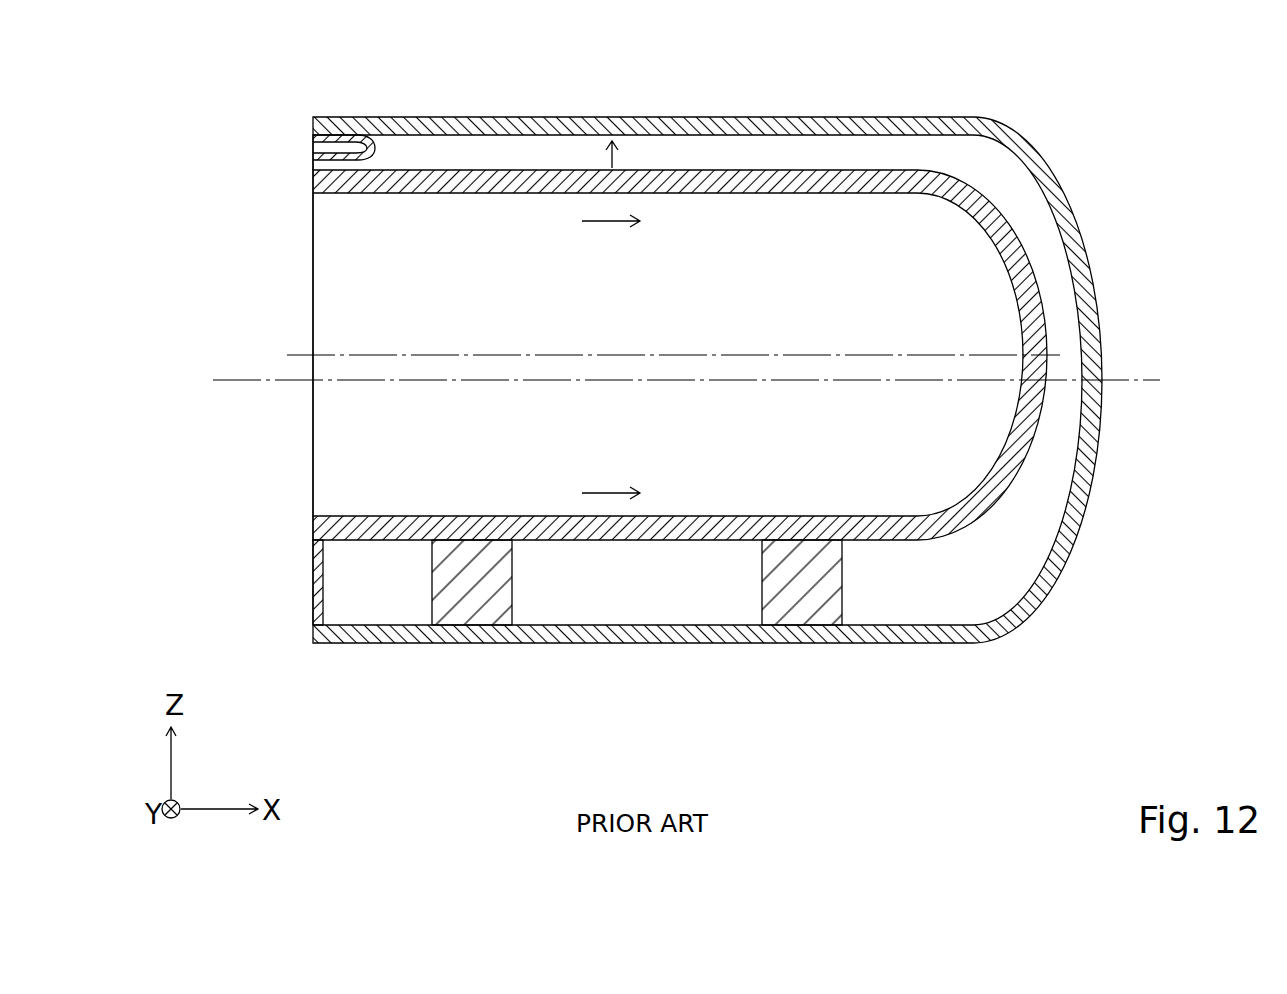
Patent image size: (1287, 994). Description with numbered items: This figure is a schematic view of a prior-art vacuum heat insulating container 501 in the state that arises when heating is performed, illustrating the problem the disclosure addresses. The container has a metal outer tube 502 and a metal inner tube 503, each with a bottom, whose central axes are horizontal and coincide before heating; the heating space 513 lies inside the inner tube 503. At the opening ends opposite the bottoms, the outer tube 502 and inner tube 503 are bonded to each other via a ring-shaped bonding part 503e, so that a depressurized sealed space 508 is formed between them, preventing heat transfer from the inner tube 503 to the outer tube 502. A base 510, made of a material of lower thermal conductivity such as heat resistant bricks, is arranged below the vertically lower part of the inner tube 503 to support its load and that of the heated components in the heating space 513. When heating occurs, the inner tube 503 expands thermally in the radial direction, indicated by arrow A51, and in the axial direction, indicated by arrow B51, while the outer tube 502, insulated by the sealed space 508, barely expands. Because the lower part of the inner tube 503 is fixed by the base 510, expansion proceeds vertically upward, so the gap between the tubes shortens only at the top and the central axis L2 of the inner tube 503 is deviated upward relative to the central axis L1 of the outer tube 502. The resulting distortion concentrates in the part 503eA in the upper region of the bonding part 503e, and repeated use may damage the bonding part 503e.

The vacuum heat insulating container 501 is at (290, 61).
The outer tube 502 is at (813, 117).
The inner tube 503 is at (743, 168).
The bonding part 503e is at (313, 578).
The part provided in the vertically upper part of the bonding part 503eA is at (357, 149).
The depressurized sealed space 508 is at (403, 148).
The base 510 is at (428, 643).
The heating space 513 is at (377, 318).
The arrow indicating radial thermal expansion A51 is at (637, 151).
The arrow indicating axial thermal expansion B51 is at (611, 357).
The central axis of the outer tube L1 is at (535, 383).
The central axis of the inner tube L2 is at (528, 354).